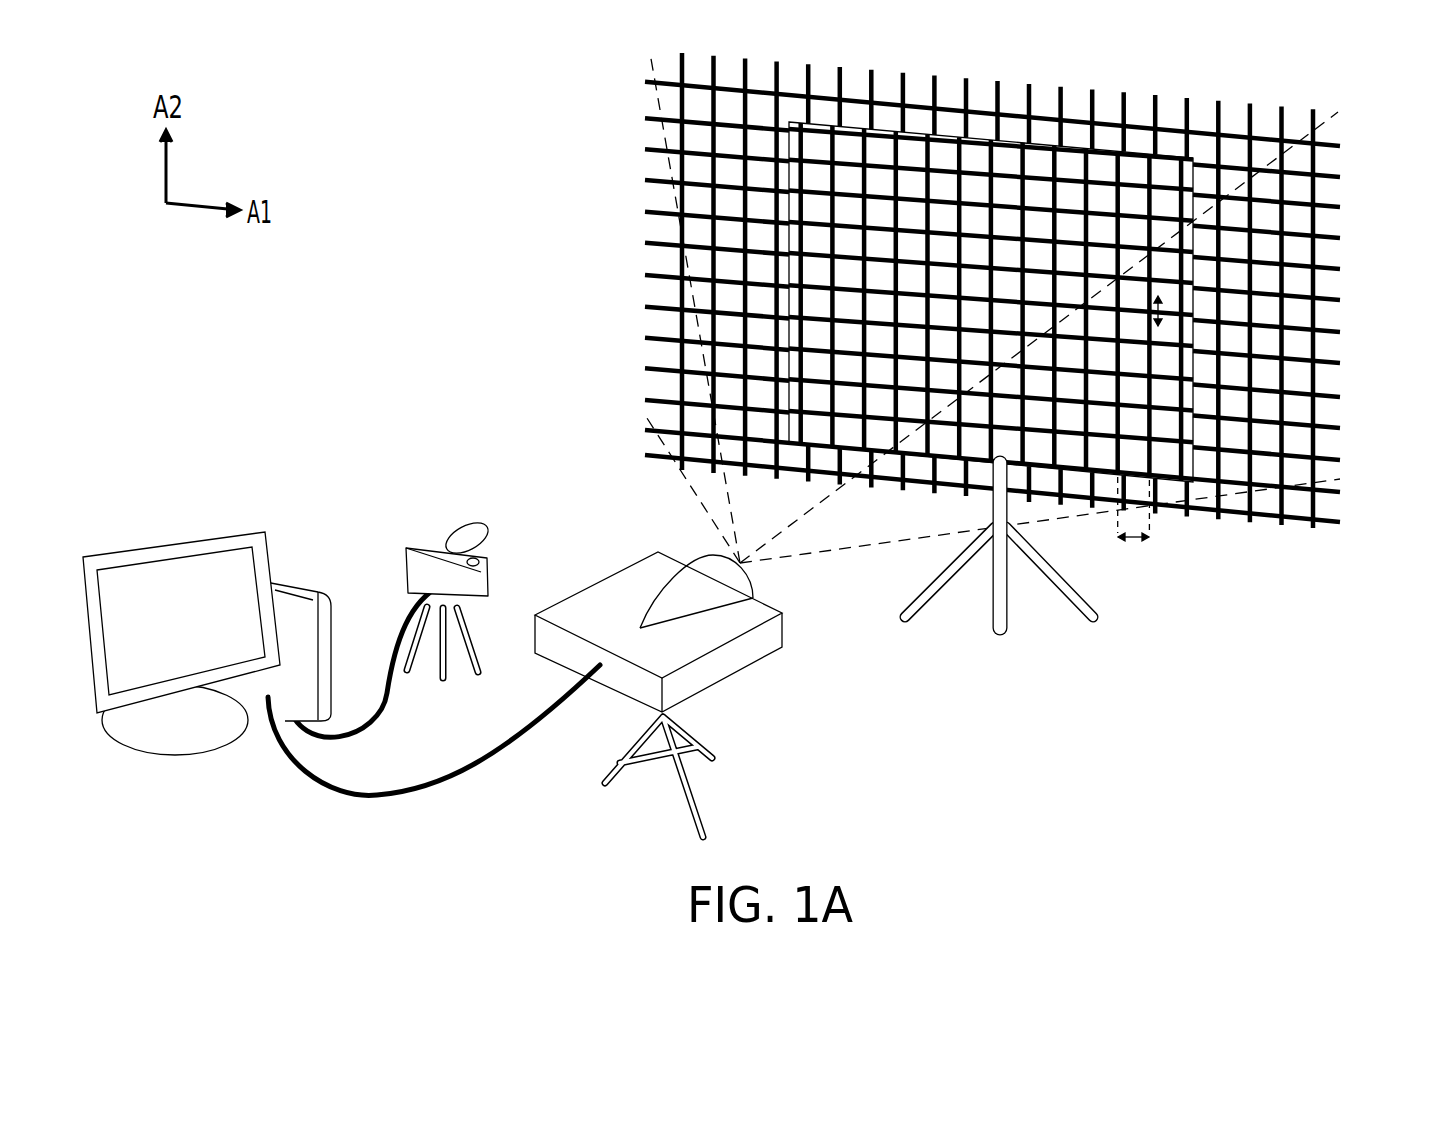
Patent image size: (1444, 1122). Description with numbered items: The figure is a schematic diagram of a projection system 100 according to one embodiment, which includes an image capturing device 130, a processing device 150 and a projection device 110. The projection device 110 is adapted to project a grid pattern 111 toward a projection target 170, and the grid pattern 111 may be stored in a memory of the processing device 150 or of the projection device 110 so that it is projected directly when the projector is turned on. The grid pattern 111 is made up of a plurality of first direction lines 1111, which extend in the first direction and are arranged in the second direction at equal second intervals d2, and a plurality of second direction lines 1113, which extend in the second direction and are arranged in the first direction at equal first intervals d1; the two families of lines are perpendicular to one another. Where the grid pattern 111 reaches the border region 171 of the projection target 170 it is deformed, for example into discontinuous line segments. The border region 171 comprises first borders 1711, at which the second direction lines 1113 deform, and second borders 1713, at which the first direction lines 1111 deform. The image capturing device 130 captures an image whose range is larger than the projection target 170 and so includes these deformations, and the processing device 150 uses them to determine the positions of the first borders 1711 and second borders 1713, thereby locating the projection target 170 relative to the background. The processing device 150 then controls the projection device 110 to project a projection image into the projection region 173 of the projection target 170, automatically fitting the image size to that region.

The projection system 100 is at (1443, 757).
The projection device 110 is at (742, 676).
The grid pattern 111 is at (1075, 187).
The first direction lines 1111 is at (1328, 140).
The second direction lines 1113 is at (1313, 125).
The image capturing device 130 is at (405, 568).
The processing device 150 is at (160, 545).
The projection target 170 is at (1170, 155).
The border region 171 is at (1187, 470).
The projection region 173 is at (1075, 432).
The first borders 1711 is at (982, 137).
The second borders 1713 is at (789, 272).
The first interval d1 is at (1134, 530).
The second interval d2 is at (1163, 308).